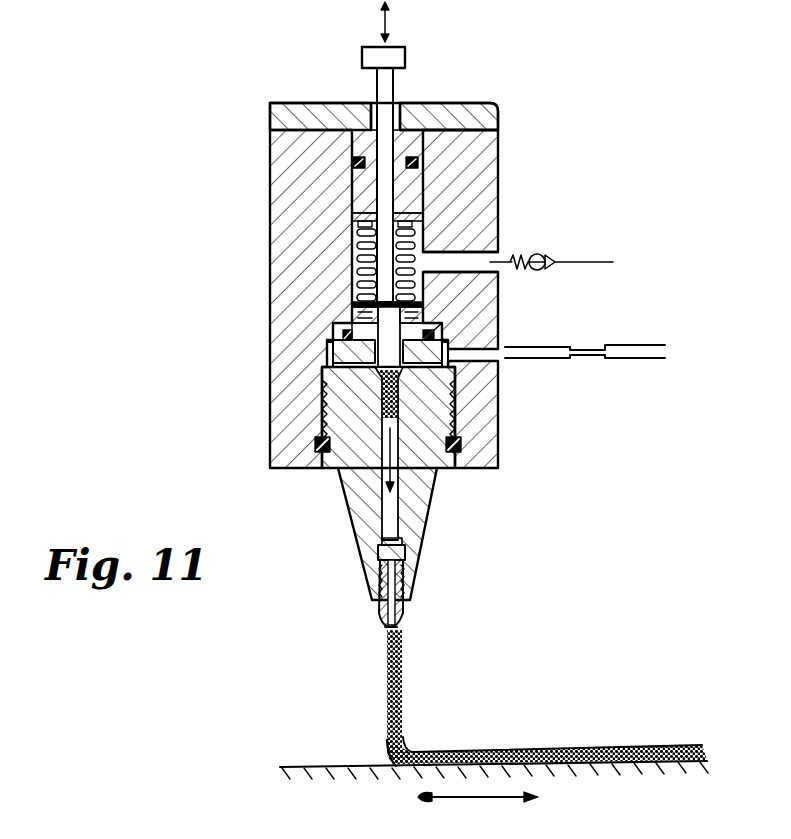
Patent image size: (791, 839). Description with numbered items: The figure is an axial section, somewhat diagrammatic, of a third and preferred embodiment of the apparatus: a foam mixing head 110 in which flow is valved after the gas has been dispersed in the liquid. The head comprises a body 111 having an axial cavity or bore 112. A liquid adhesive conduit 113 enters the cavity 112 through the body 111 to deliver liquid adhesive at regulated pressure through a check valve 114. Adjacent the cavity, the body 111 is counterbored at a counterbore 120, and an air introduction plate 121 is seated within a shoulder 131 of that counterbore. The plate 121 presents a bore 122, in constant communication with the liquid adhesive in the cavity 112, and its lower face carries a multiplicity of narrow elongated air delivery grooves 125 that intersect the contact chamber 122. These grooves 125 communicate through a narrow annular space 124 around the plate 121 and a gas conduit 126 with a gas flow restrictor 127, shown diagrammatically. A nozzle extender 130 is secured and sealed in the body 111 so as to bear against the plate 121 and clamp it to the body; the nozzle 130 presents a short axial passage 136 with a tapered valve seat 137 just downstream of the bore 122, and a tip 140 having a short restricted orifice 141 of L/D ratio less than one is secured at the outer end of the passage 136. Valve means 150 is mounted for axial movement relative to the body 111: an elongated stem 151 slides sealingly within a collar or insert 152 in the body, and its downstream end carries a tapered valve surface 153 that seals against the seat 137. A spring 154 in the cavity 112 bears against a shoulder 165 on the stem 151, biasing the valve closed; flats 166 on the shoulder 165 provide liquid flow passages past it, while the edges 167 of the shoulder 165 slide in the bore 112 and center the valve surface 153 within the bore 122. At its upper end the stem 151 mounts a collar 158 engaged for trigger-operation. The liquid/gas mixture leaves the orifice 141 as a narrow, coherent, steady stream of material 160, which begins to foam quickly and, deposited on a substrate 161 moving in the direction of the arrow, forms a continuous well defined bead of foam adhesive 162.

The foam mixing head 110 is at (203, 284).
The body 111 is at (303, 224).
The axial cavity or bore 112 is at (376, 263).
The liquid adhesive conduit 113 is at (480, 249).
The check valve 114 is at (550, 250).
The counterbore 120 is at (327, 345).
The air introduction plate 121 is at (350, 390).
The bore (contact chamber) 122 is at (426, 312).
The narrow annular space 124 is at (326, 362).
The air delivery grooves 125 is at (320, 399).
The gas conduit 126 is at (486, 362).
The gas flow restrictor 127 is at (583, 342).
The nozzle extender 130 is at (433, 516).
The shoulder 131 is at (340, 340).
The axial passage 136 is at (388, 505).
The valve seat 137 is at (430, 407).
The tip 140 is at (408, 613).
The orifice 141 is at (398, 627).
The valve means 150 is at (409, 79).
The stem 151 is at (440, 101).
The collar or insert 152 is at (423, 181).
The valve surface 153 is at (445, 338).
The spring 154 is at (423, 236).
The collar 158 is at (396, 52).
The stream of material 160 is at (403, 692).
The substrate 161 is at (352, 745).
The bead of foam liquid adhesive 162 is at (678, 748).
The shoulder 165 is at (473, 256).
The flats 166 is at (534, 282).
The edges 167 is at (343, 330).